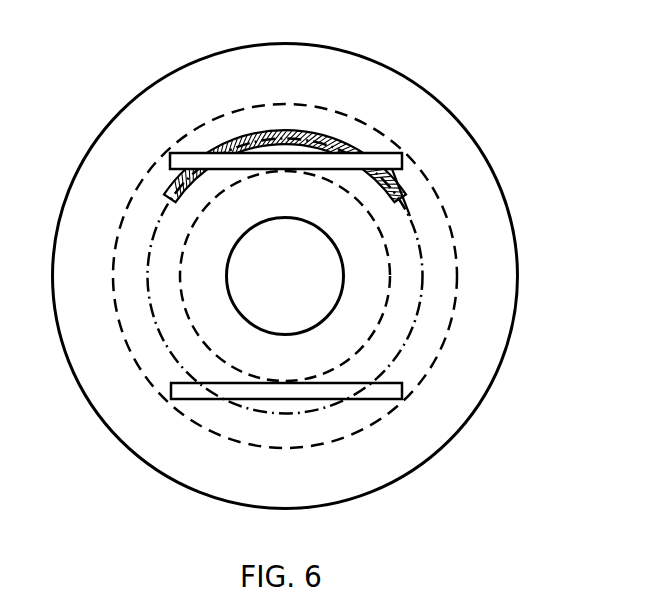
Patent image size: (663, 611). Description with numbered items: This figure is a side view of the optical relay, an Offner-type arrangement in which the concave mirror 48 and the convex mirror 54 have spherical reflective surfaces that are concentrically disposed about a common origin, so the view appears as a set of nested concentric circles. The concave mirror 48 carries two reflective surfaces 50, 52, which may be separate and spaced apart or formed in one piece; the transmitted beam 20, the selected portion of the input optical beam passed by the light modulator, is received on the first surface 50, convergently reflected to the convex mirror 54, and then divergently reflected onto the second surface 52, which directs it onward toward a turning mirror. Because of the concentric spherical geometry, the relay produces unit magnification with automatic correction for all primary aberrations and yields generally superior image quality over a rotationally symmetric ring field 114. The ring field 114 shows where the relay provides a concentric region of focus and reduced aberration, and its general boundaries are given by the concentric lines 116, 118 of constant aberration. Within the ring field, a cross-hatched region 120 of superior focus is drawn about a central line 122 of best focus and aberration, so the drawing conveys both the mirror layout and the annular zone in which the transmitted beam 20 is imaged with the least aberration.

The concave mirror 48 is at (125, 110).
The reflective surface 50 is at (240, 132).
The reflective surface 52 is at (262, 427).
The convex mirror 54 is at (342, 257).
The transmitted beam 20 is at (390, 152).
The ring field 114 is at (288, 128).
The line of constant aberration 116 is at (458, 262).
The line of constant aberration 118 is at (375, 330).
The cross-hatched region 120 is at (347, 144).
The central line 122 is at (423, 290).